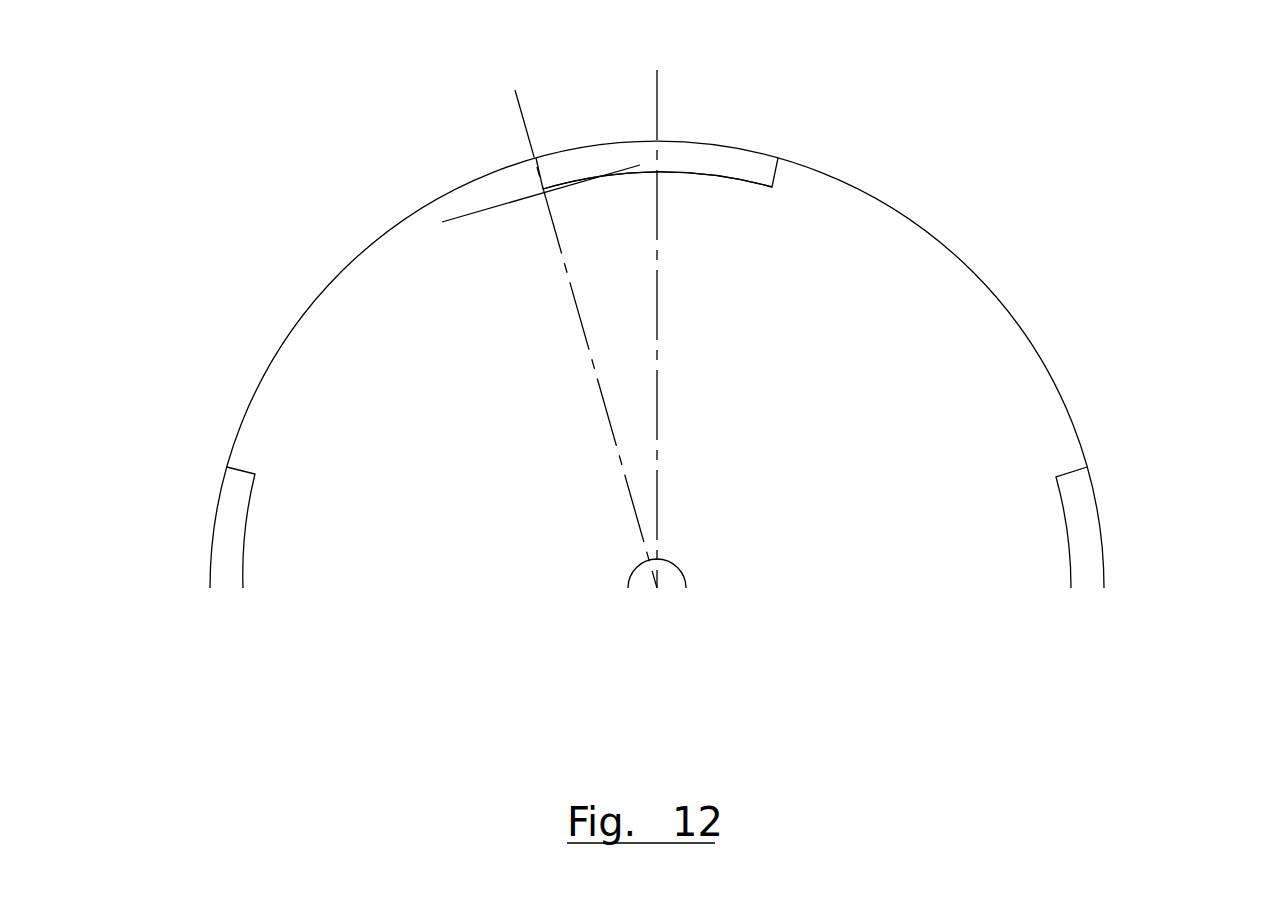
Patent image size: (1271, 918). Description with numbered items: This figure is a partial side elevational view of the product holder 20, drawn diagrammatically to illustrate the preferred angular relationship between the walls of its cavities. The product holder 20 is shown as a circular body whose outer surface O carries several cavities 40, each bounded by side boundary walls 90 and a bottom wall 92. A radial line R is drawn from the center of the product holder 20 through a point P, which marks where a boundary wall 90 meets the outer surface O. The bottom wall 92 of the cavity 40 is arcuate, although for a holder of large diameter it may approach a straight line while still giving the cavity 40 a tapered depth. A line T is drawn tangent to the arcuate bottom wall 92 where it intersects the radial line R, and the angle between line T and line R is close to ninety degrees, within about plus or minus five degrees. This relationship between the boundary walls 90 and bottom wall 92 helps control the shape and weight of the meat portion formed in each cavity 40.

The product holder 20 is at (997, 393).
The cavity 40 is at (733, 155).
The boundary wall 90 is at (540, 194).
The bottom wall 92 is at (738, 183).
The outer surface O is at (435, 200).
The point P is at (537, 157).
The tangent line T is at (442, 222).
The radial line R is at (605, 403).